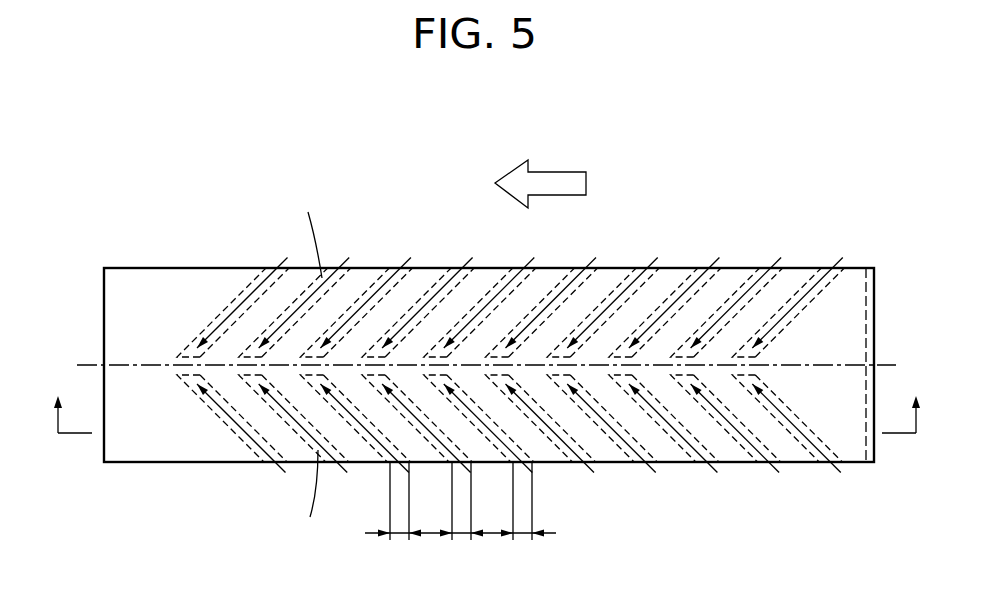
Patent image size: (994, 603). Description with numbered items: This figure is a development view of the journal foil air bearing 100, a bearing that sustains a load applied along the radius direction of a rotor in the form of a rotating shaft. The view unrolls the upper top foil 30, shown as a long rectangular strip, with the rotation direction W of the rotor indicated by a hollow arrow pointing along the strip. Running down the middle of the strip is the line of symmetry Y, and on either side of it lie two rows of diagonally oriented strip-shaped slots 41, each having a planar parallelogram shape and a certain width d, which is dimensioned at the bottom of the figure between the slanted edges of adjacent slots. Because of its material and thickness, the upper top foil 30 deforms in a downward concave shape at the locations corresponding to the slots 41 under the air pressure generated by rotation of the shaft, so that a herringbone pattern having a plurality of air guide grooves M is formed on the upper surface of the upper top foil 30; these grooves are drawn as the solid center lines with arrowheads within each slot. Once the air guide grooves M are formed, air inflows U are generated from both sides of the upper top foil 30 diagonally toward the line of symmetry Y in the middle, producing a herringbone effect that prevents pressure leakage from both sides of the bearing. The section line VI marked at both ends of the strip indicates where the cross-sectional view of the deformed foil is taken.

The journal foil air bearing 100 is at (133, 234).
The upper top foil 30 is at (180, 292).
The slots 41 is at (290, 268).
The air guide grooves M is at (309, 367).
The air inflows U is at (448, 268).
The rotation direction W is at (565, 172).
The line of symmetry Y is at (85, 363).
The section line VI- VI is at (472, 401).
The width d is at (460, 513).